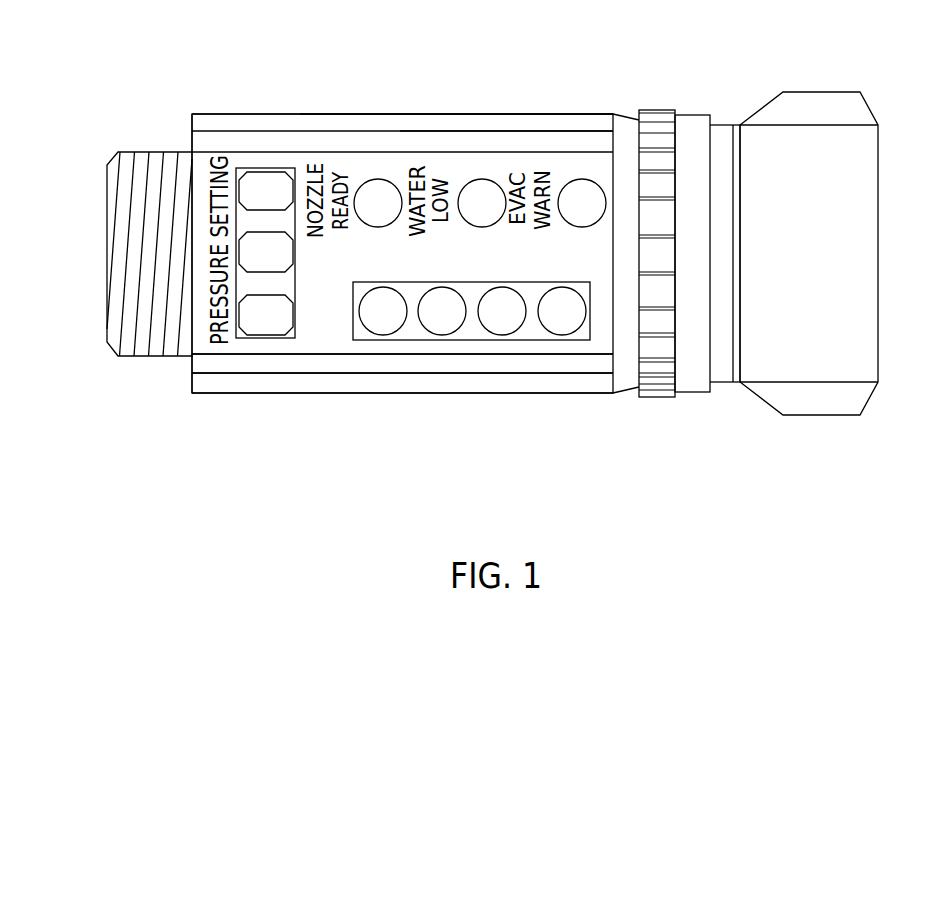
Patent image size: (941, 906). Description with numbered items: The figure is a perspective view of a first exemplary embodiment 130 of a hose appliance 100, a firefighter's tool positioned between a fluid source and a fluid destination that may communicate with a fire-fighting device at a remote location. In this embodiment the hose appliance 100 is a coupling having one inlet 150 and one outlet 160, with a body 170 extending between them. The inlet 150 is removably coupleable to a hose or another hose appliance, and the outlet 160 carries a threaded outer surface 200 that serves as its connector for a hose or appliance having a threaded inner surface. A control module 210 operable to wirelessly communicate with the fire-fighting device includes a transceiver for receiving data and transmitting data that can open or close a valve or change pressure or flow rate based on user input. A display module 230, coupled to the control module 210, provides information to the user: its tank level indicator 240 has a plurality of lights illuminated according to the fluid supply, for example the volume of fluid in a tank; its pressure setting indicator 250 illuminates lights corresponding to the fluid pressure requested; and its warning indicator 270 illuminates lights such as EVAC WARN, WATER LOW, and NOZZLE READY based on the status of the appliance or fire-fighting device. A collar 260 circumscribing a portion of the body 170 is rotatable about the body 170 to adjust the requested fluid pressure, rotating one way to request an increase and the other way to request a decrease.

The hose appliance 100 is at (402, 437).
The first exemplary embodiment 130 is at (213, 438).
The inlet 150 is at (835, 438).
The outlet 160 is at (137, 387).
The body 170 is at (278, 82).
The threaded outer surface 200 is at (143, 172).
The control module 210 is at (625, 92).
The display module 230 is at (408, 112).
The tank level indicator 240 is at (570, 343).
The pressure setting indicator 250 is at (267, 367).
The collar 260 is at (698, 410).
The warning indicator 270 is at (505, 130).